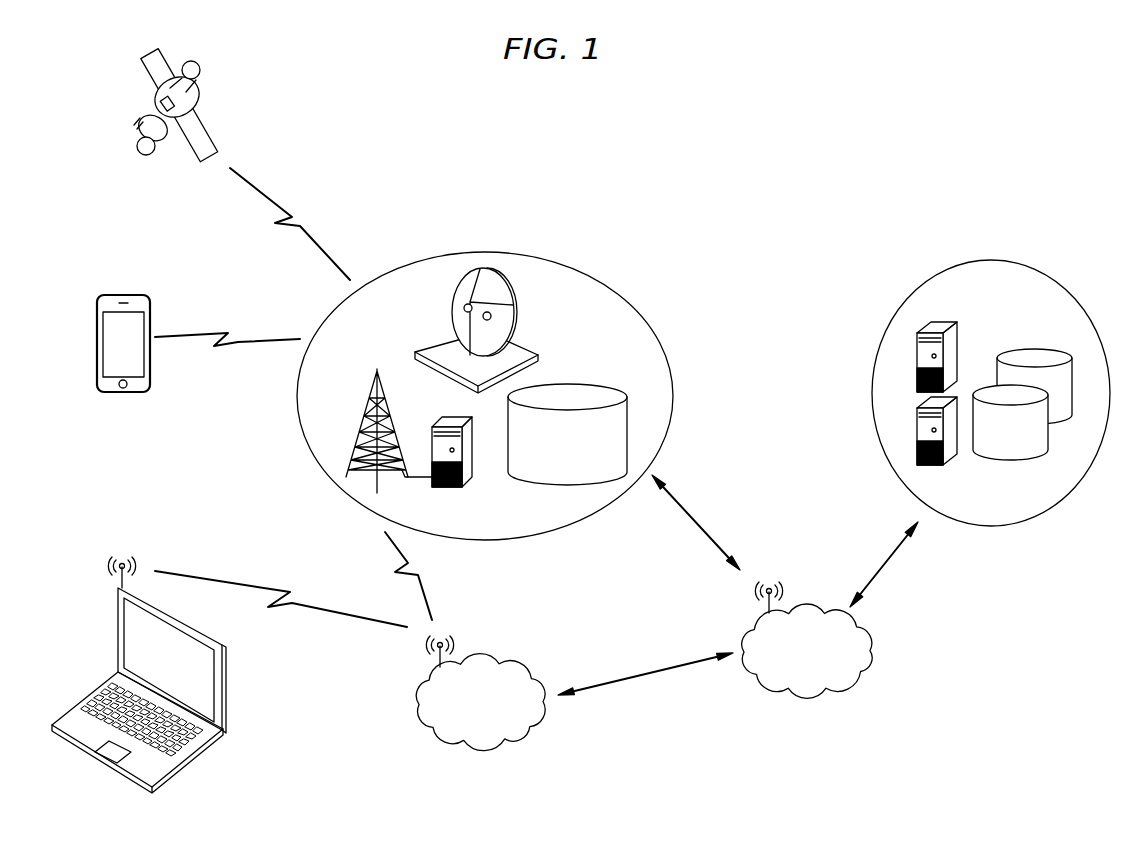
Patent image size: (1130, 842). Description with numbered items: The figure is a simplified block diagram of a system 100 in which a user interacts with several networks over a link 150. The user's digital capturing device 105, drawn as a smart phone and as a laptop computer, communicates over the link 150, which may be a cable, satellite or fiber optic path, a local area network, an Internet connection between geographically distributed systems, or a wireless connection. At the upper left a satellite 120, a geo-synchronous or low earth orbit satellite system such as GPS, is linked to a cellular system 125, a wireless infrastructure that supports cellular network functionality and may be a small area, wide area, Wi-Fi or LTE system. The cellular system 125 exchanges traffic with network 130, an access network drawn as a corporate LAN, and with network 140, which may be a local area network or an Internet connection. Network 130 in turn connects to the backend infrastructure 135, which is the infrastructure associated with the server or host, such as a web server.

The system 100 is at (794, 155).
The digital capturing device 105 is at (95, 345).
The satellite 120 is at (205, 140).
The cellular system 125 is at (583, 263).
The network 130 is at (818, 697).
The backend infrastructure 135 is at (925, 285).
The network 140 is at (537, 730).
The link 150 is at (281, 198).